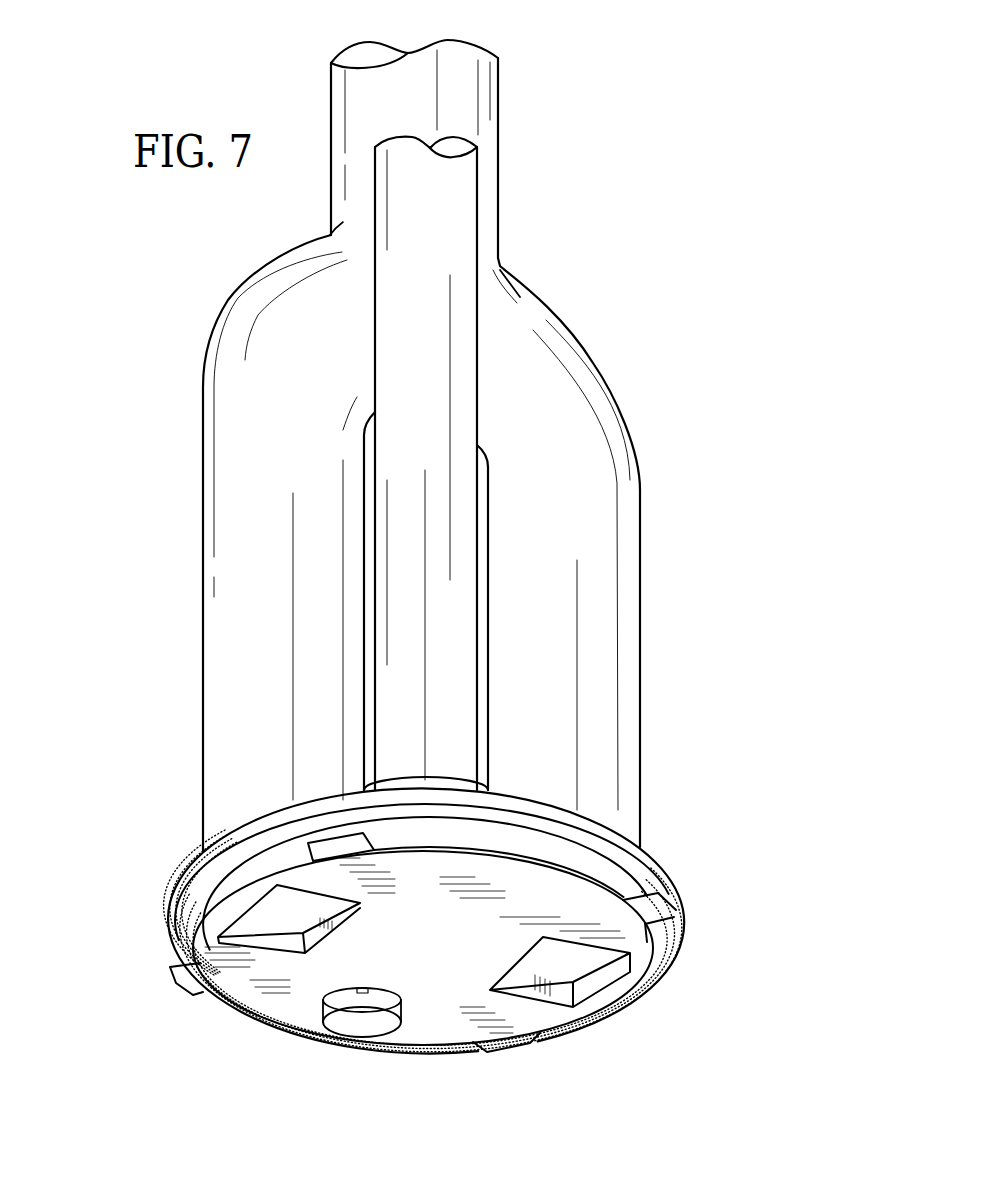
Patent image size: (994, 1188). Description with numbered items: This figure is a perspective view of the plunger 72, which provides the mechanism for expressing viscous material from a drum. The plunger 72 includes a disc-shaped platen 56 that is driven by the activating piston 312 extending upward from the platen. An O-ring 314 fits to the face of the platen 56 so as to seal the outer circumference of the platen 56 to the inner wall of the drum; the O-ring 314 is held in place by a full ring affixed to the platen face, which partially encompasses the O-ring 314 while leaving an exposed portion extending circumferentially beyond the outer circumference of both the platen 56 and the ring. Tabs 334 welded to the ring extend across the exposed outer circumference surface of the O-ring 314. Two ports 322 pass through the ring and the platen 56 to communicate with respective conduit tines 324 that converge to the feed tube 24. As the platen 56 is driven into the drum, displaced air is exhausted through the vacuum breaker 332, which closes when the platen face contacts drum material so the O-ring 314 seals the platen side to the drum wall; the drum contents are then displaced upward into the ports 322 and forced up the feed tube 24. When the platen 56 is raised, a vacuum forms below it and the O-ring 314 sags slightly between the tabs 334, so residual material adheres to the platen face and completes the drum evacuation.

The plunger 72 is at (157, 549).
The feed tube 24 is at (462, 117).
The activating piston 312 is at (447, 210).
The conduit tines 324 is at (233, 434).
The platen 56 is at (597, 827).
The O-ring 314 is at (622, 870).
The tabs 334 is at (337, 850).
The ports 322 is at (258, 913).
The vacuum breaker 332 is at (353, 1023).